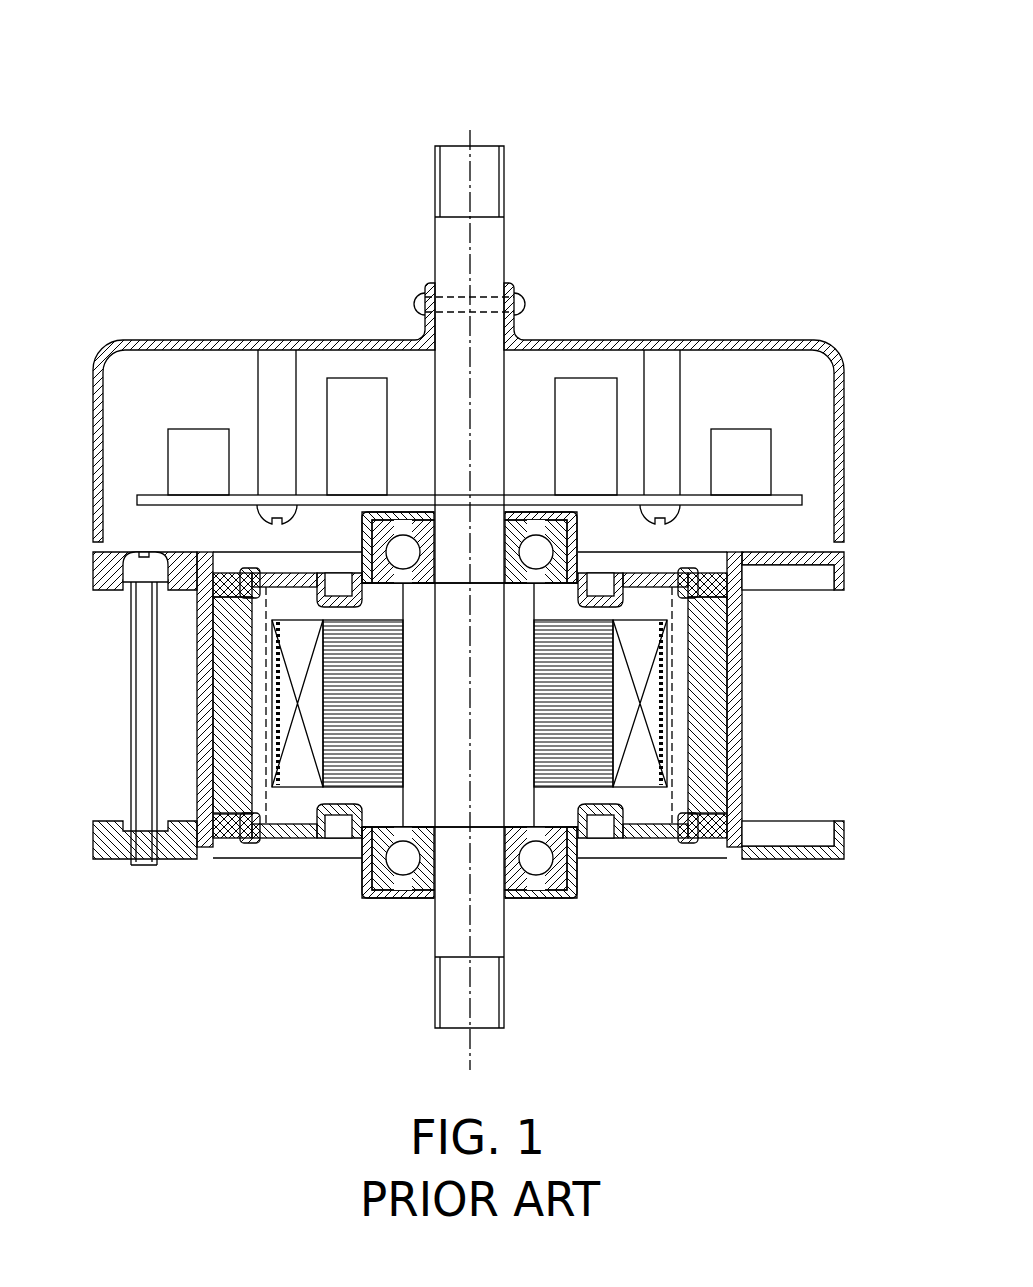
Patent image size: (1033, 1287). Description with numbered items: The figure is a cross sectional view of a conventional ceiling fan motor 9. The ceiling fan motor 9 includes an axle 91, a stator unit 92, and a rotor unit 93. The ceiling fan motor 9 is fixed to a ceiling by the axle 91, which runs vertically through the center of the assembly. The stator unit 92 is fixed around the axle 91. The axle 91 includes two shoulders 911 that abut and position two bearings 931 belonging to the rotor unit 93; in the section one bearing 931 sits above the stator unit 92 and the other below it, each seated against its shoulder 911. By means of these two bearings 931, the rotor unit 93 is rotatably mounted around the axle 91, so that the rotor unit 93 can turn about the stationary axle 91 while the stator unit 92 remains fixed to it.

The ceiling fan motor 9 is at (272, 103).
The axle 91 is at (497, 228).
The shoulder 911 is at (426, 585).
The stator unit 92 is at (578, 800).
The rotor unit 93 is at (183, 893).
The bearing 931 is at (382, 525).